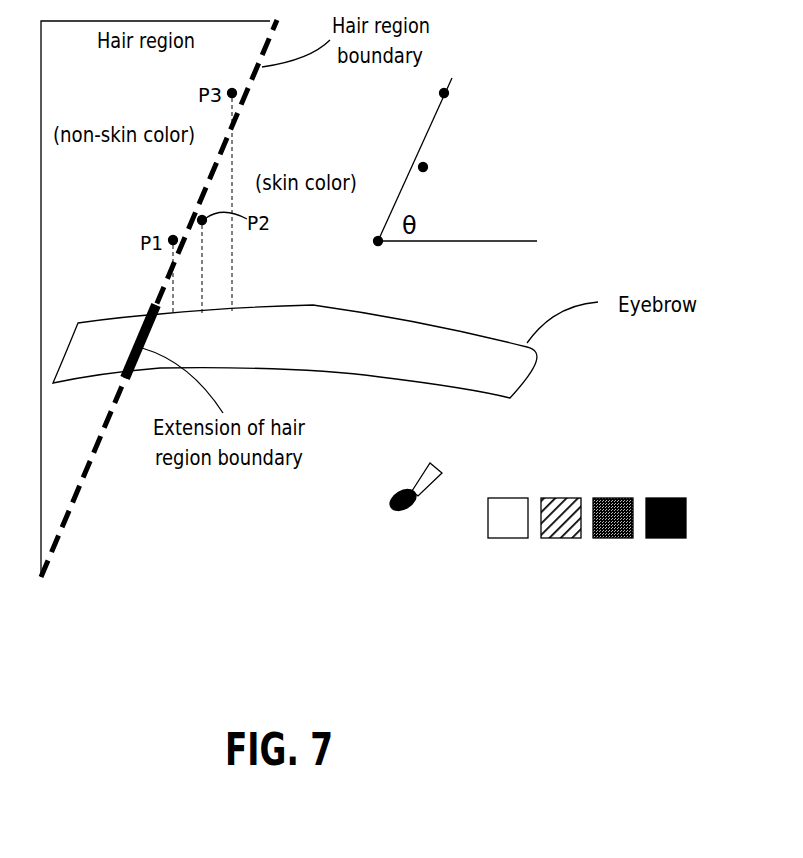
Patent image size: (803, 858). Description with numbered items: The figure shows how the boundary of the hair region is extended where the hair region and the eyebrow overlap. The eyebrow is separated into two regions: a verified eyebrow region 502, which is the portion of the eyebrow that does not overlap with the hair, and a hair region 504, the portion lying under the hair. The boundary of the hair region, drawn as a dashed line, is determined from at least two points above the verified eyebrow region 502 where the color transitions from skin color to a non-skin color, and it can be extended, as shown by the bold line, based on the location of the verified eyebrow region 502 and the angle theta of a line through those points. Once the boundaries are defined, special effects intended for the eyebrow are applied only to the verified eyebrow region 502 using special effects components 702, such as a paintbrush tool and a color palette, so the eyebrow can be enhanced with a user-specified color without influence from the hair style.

The verified eyebrow region 502 is at (342, 349).
The hair region 504 is at (117, 358).
The special effects components 702 is at (594, 444).